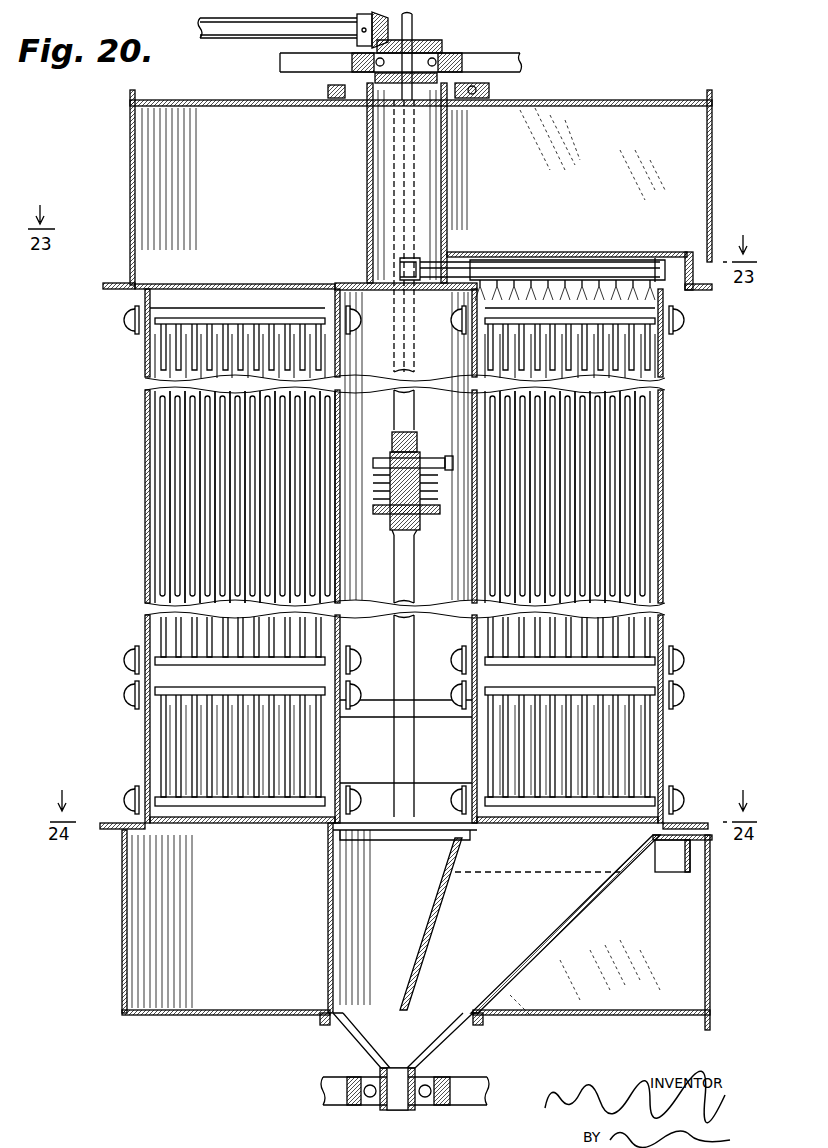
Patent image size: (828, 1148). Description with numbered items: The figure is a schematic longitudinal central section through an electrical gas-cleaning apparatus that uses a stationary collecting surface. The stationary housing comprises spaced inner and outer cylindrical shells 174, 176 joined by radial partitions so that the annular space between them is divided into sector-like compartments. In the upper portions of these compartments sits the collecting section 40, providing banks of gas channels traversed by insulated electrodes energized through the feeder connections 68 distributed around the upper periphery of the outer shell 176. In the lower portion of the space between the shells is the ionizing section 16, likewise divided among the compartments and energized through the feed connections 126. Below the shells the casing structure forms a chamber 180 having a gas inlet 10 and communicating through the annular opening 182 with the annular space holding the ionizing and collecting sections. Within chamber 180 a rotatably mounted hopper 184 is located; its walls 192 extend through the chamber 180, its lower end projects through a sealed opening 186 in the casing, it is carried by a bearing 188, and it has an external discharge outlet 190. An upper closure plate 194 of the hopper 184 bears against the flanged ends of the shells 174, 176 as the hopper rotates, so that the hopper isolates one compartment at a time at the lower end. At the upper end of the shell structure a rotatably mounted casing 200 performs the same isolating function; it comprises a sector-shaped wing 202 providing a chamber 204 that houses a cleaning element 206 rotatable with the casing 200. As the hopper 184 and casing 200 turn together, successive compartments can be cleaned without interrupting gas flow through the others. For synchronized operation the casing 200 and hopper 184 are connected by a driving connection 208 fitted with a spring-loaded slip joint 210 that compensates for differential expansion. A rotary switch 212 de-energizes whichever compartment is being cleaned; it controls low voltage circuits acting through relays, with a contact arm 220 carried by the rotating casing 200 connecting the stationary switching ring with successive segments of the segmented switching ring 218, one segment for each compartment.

The gas inlet 10 is at (693, 955).
The ionizing section 16 is at (607, 762).
The collecting section 40 is at (624, 473).
The feeder connections 68 is at (128, 322).
The feed connections 126 is at (123, 694).
The inner cylindrical shell 174 is at (473, 560).
The outer cylindrical shell 176 is at (665, 545).
The chamber 180 is at (215, 995).
The annular opening 182 is at (243, 825).
The hopper 184 is at (427, 921).
The sealed opening 186 is at (485, 1025).
The bearing 188 is at (450, 1105).
The discharge outlet 190 is at (405, 1105).
The hopper walls 192 is at (445, 880).
The upper closure plate 194 is at (440, 850).
The rotatably mounted casing 200 is at (447, 166).
The sector-shaped wing 202 is at (505, 260).
The chamber 204 is at (570, 262).
The cleaning element 206 is at (625, 272).
The driving connection 208 is at (412, 404).
The spring-loaded slip joint 210 is at (432, 488).
The rotary switch 212 is at (490, 90).
The switching ring 218 is at (345, 78).
The contact arm 220 is at (463, 83).